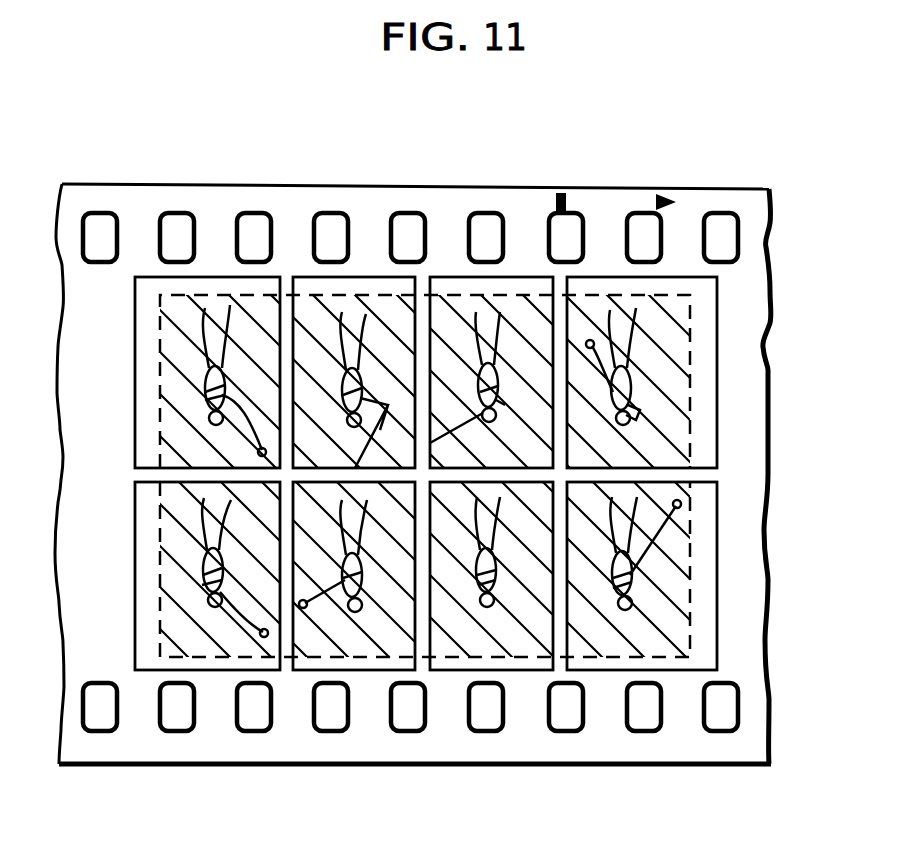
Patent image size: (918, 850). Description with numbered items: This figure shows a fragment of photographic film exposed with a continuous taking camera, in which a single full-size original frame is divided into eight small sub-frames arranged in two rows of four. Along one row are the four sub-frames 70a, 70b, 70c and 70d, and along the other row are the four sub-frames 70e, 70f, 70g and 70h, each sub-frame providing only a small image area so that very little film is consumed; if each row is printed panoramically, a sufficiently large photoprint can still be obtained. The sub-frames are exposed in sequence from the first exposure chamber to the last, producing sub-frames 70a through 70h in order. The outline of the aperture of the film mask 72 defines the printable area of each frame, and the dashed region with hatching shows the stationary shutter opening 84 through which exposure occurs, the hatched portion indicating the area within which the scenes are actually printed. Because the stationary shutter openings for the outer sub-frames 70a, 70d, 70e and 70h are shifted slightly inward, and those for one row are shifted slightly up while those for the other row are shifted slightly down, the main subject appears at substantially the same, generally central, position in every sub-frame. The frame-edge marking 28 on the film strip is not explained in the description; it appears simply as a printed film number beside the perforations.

The sub-frame 70a is at (213, 665).
The sub-frame 70b is at (372, 665).
The sub-frame 70c is at (522, 665).
The sub-frame 70d is at (613, 665).
The sub-frame 70e is at (215, 290).
The sub-frame 70f is at (368, 290).
The sub-frame 70g is at (525, 290).
The sub-frame 70h is at (672, 290).
The stationary shutter opening 84 is at (205, 390).
The aperture of the film mask 72 is at (690, 553).
The film strip 28 is at (413, 474).